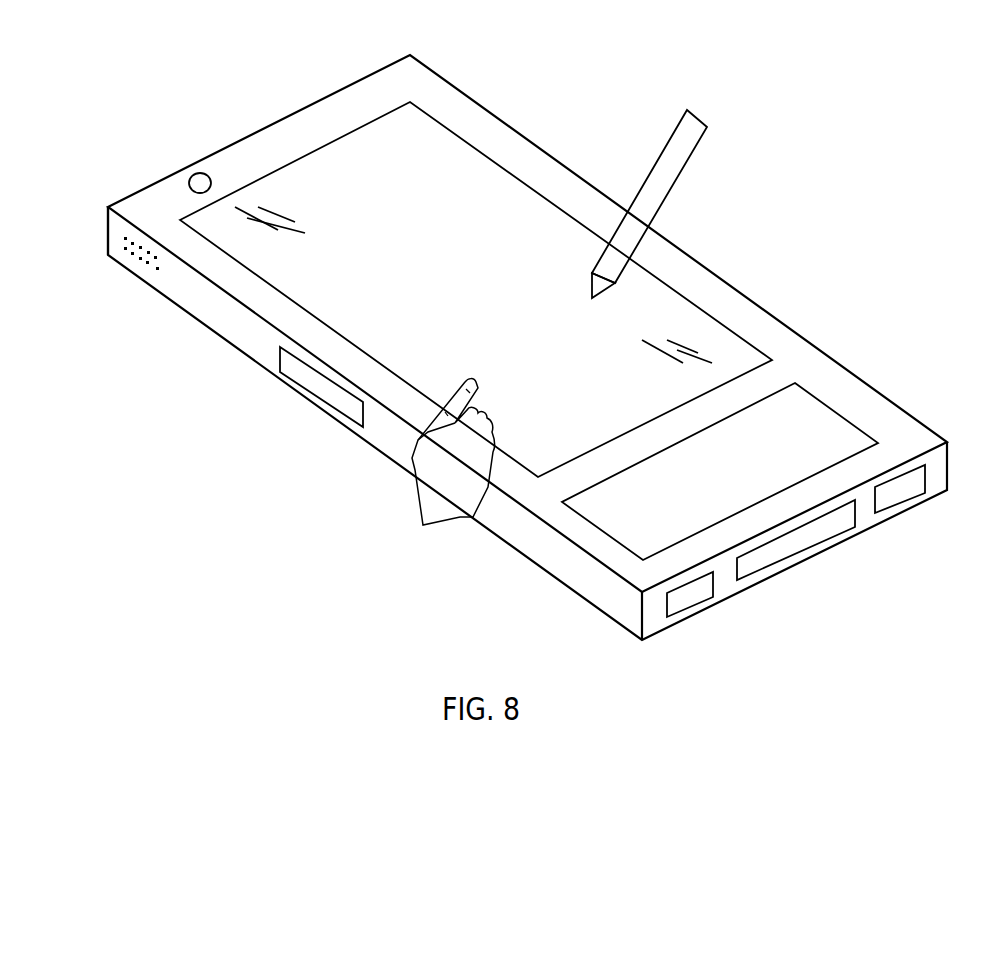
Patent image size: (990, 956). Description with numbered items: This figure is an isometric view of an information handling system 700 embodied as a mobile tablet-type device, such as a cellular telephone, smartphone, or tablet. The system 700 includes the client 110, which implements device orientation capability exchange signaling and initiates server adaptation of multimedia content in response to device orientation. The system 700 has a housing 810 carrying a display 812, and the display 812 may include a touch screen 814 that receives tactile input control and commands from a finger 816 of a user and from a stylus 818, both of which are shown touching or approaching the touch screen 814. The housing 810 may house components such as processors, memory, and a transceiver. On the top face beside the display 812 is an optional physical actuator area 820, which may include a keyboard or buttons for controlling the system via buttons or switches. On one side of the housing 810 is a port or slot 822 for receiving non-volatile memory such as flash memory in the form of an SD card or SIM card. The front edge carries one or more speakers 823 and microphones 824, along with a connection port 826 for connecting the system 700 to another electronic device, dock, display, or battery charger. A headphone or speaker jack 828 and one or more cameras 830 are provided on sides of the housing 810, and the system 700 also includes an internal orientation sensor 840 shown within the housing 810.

The client 110 is at (445, 79).
The information handling system 700 is at (548, 78).
The housing 810 is at (357, 81).
The display 812 is at (412, 163).
The touch screen 814 is at (501, 288).
The finger 816 is at (462, 380).
The stylus 818 is at (668, 142).
The physical actuator area 820 is at (807, 428).
The port or slot 822 is at (291, 383).
The speaker 823 is at (697, 607).
The microphone 824 is at (903, 500).
The port 826 is at (810, 547).
The headphone or speaker jack 828 is at (130, 195).
The camera 830 is at (192, 175).
The internal orientation sensor 840 is at (140, 257).